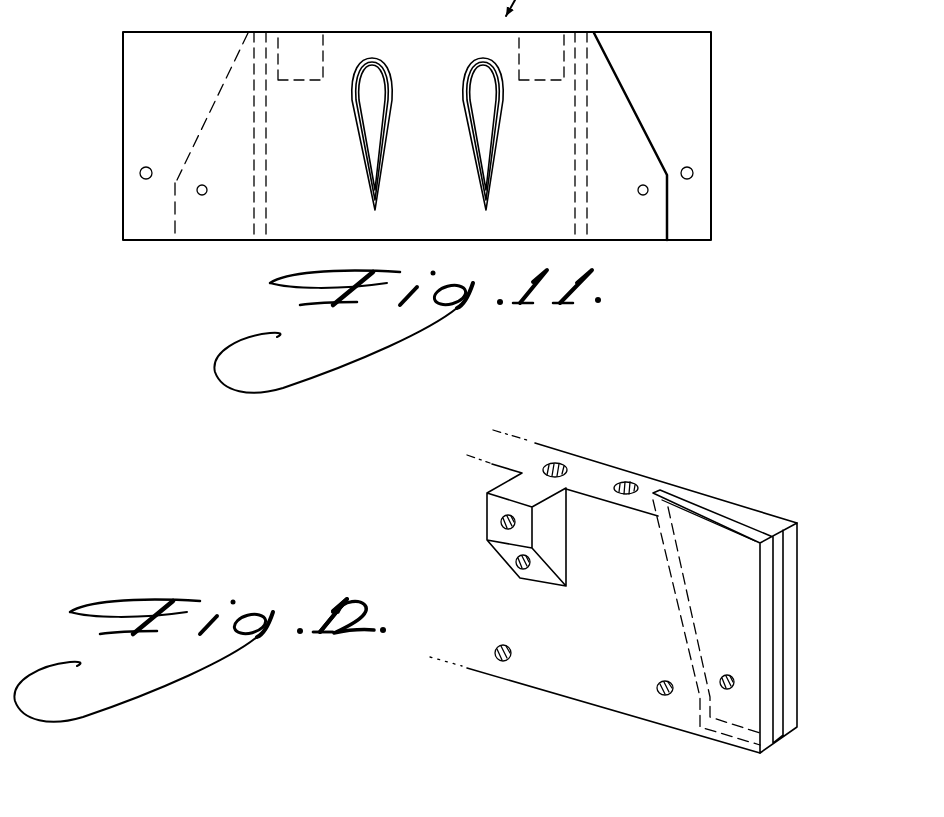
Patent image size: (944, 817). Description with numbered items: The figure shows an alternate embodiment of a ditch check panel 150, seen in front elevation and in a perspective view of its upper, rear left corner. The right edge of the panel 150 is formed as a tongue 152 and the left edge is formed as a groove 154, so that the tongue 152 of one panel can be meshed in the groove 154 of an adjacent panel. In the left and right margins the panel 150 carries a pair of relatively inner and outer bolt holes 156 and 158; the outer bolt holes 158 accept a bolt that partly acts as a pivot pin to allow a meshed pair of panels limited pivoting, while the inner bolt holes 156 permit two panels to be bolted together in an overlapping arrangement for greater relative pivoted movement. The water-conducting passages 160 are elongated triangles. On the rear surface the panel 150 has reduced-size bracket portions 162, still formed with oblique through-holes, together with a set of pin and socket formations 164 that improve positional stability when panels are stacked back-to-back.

In FIG. 12, the ditch check panel 150 is at (465, 496).
In FIG. 11, the tongue 152 is at (678, 48).
In FIG. 11, the groove 154 is at (120, 116).
In FIG. 12, the groove 154 is at (734, 520).
In FIG. 11, the inner bolt hole 156 is at (203, 196).
In FIG. 12, the inner bolt hole 156 is at (656, 687).
In FIG. 11, the outer bolt hole 158 is at (140, 176).
In FIG. 12, the outer bolt hole 158 is at (722, 677).
In FIG. 11, the water-conducting passage 160 is at (373, 157).
In FIG. 12, the bracket portion 162 is at (556, 531).
In FIG. 12, the pin and socket formation 164 is at (500, 527).